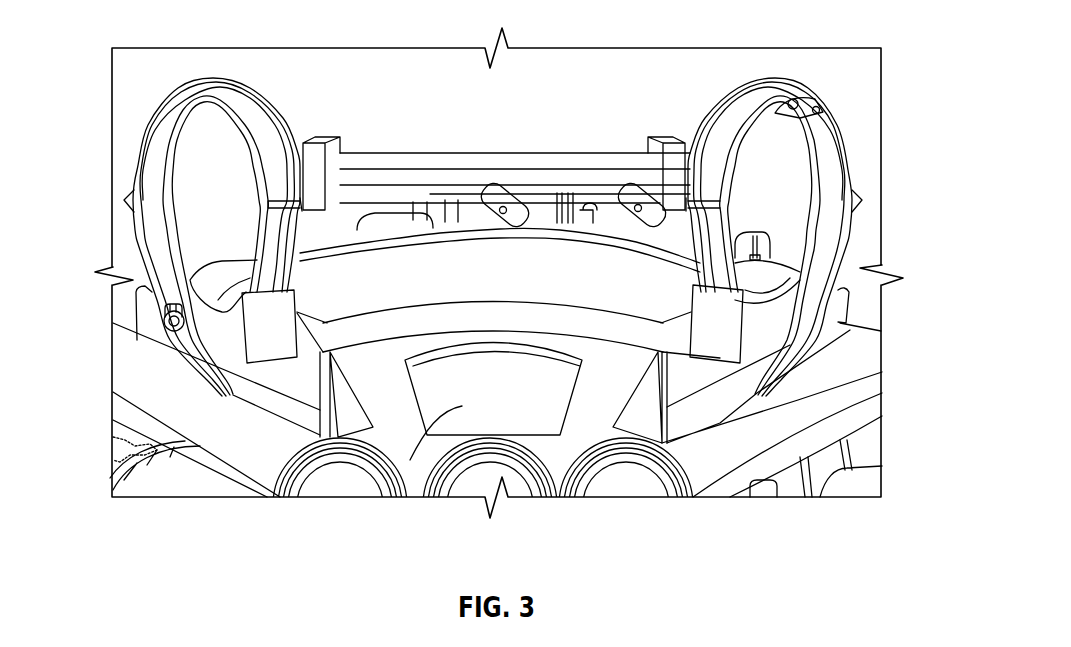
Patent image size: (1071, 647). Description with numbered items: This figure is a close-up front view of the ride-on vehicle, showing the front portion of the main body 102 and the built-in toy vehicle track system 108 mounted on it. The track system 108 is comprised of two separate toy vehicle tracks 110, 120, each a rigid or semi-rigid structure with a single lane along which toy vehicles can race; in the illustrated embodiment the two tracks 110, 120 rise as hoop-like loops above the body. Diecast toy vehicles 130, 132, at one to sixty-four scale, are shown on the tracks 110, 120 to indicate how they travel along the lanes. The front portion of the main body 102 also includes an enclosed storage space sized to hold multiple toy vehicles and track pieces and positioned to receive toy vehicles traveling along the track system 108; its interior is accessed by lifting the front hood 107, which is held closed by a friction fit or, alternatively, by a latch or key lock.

The main body 102 is at (847, 397).
The front hood 107 is at (403, 488).
The toy vehicle track system 108 is at (497, 199).
The toy vehicle track 110 is at (148, 175).
The toy vehicle track 120 is at (838, 182).
The toy vehicle 130 is at (172, 324).
The toy vehicle 132 is at (824, 106).